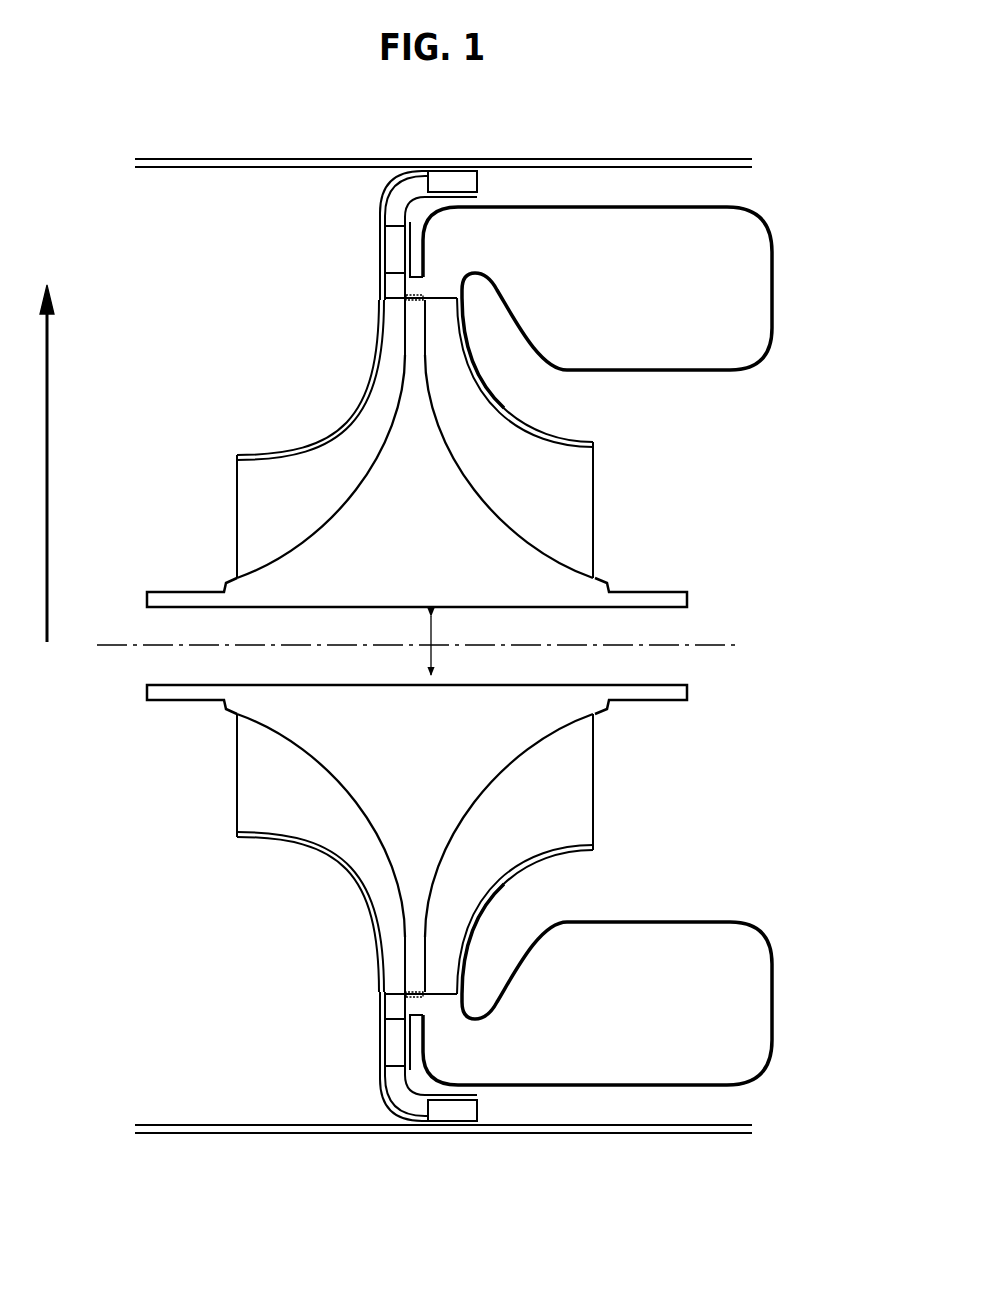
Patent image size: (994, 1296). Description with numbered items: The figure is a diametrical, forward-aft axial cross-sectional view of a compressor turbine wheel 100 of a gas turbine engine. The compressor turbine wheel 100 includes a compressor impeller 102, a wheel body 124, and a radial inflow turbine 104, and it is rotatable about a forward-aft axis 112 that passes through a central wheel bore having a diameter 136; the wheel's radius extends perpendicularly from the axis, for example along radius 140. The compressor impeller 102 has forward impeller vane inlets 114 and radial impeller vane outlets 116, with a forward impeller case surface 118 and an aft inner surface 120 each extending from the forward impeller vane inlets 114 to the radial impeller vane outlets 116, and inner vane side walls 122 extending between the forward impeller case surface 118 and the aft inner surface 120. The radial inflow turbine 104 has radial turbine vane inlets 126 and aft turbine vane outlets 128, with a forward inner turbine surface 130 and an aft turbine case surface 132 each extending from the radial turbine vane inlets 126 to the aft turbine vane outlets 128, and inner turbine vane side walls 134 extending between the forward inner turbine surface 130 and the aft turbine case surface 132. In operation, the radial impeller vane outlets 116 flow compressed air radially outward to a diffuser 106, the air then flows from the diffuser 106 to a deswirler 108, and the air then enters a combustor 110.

The compressor turbine wheel 100 is at (610, 484).
The compressor impeller 102 is at (298, 470).
The radial inflow turbine 104 is at (555, 526).
The diffuser 106 is at (392, 252).
The deswirler 108 is at (478, 184).
The combustor 110 is at (715, 287).
The forward-aft axis 112 is at (133, 647).
The forward impeller vane inlet 114 is at (237, 492).
The radial impeller vane outlet 116 is at (397, 298).
The forward impeller case surface 118 is at (368, 372).
The aft inner surface 120 is at (373, 457).
The inner vane side walls 122 is at (288, 501).
The wheel body 124 is at (407, 512).
The radial turbine vane inlet 126 is at (442, 298).
The aft turbine vane outlet 128 is at (593, 513).
The forward inner turbine surface 130 is at (503, 520).
The aft turbine case surface 132 is at (482, 390).
The inner turbine vane side walls 134 is at (502, 461).
The diameter 136 is at (433, 653).
The radius 140 is at (48, 378).